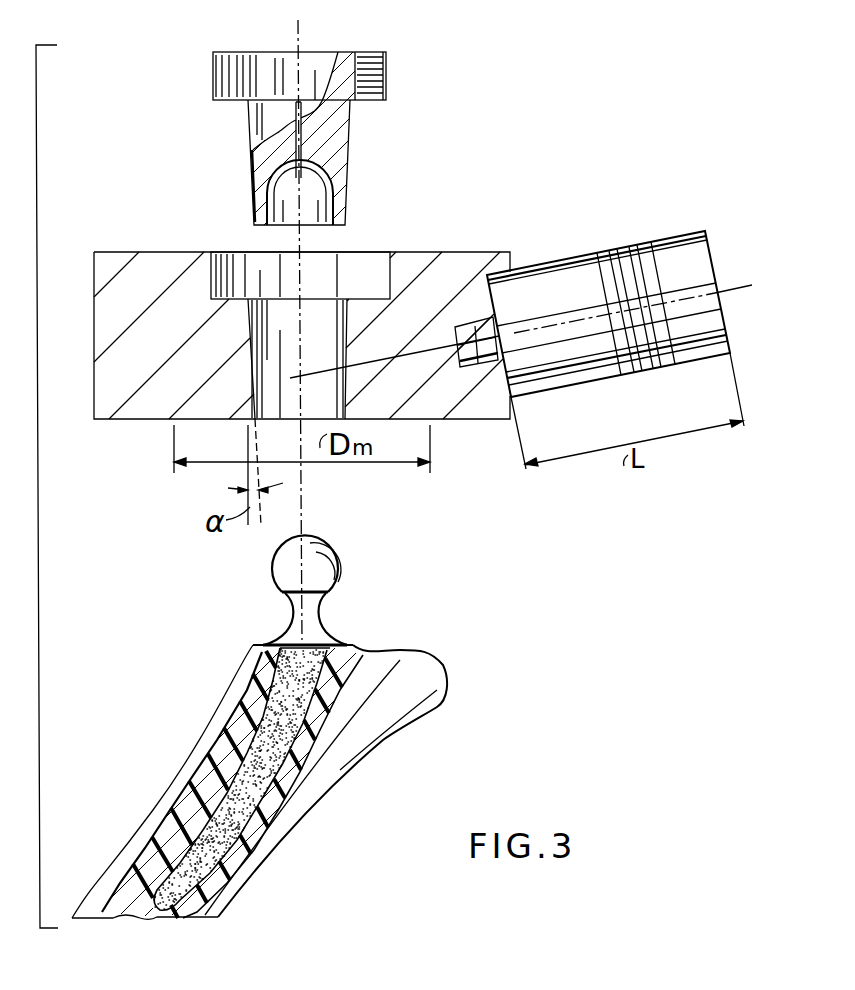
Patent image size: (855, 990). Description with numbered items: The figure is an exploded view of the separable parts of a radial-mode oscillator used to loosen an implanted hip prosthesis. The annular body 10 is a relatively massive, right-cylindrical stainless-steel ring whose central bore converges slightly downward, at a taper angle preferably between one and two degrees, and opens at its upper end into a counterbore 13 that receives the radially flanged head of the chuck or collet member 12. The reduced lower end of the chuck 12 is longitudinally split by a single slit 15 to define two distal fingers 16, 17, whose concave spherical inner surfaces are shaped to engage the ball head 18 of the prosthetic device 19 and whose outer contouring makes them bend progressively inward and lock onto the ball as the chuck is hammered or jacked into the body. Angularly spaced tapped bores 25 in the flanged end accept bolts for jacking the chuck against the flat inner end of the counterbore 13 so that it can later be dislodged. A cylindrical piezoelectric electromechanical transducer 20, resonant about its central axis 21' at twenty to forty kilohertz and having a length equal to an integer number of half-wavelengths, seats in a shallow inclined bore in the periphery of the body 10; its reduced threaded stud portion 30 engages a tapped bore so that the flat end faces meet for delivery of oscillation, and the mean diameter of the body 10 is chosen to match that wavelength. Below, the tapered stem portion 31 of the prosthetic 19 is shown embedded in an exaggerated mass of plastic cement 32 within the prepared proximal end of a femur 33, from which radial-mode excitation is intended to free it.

The annular body 10 is at (302, 329).
The chuck or collet member 12 is at (319, 120).
The counterbore 13 is at (370, 275).
The slit 15 is at (303, 175).
The distal finger 16 is at (258, 205).
The distal finger 17 is at (337, 190).
The ball head 18 is at (322, 583).
The prosthetic device 19 is at (237, 860).
The electromechanical transducer 20 is at (619, 327).
The central axis 21' is at (633, 310).
The tapped bores 25 is at (387, 84).
The stud portion 30 is at (492, 365).
The tapered stem portion 31 is at (220, 762).
The plastic cement 32 is at (188, 815).
The femur 33 is at (259, 782).